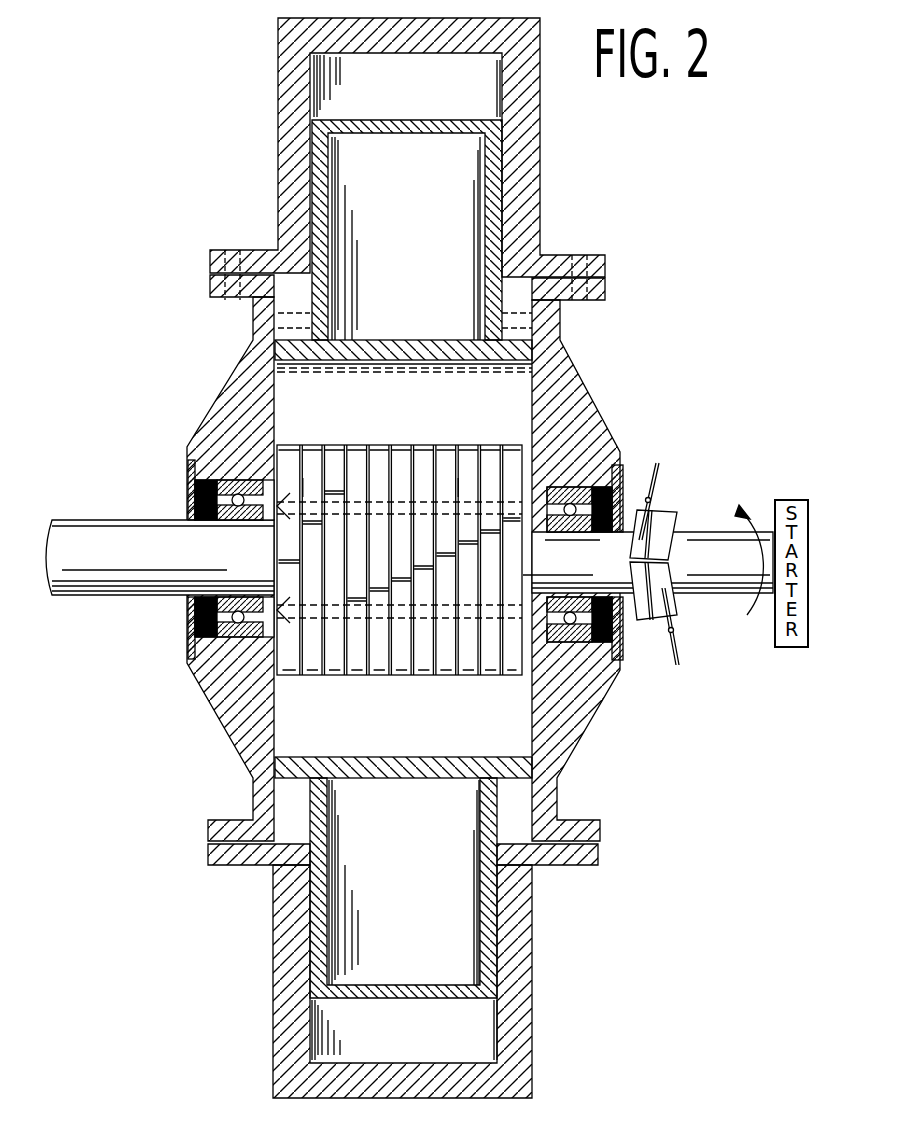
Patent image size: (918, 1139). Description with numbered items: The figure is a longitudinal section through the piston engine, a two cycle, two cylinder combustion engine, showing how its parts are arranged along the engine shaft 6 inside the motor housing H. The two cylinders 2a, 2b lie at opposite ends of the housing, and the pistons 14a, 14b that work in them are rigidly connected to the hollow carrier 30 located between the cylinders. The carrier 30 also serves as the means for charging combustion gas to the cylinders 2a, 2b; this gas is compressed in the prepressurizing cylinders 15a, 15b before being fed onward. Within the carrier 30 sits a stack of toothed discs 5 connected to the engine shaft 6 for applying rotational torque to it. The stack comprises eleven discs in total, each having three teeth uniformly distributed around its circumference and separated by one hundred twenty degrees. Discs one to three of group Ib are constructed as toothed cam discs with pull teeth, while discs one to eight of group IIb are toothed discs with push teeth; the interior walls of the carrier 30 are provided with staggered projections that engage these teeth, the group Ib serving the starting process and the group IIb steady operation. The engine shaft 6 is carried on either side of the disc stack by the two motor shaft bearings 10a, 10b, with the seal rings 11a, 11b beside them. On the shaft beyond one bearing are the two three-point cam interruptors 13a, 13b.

The cylinder 2a is at (533, 243).
The cylinder 2b is at (280, 899).
The piston 14a is at (472, 188).
The piston 14b is at (467, 940).
The prepressurizing cylinder 15a is at (523, 302).
The prepressurizing cylinder 15b is at (518, 820).
The hollow carrier 30 is at (410, 353).
The stack of toothed discs 5 is at (420, 675).
The engine shaft 6 is at (140, 580).
The motor shaft bearing 10a is at (232, 520).
The motor shaft bearing 10b is at (568, 532).
The seal ring 11a is at (190, 495).
The seal ring 11b is at (620, 640).
The three-point cam interruptor 13a is at (653, 510).
The three-point cam interruptor 13b is at (677, 612).
The motor housing H is at (212, 435).
The group of toothed cam discs with pull teeth Ib is at (312, 488).
The group of toothed discs with push teeth IIb is at (460, 488).